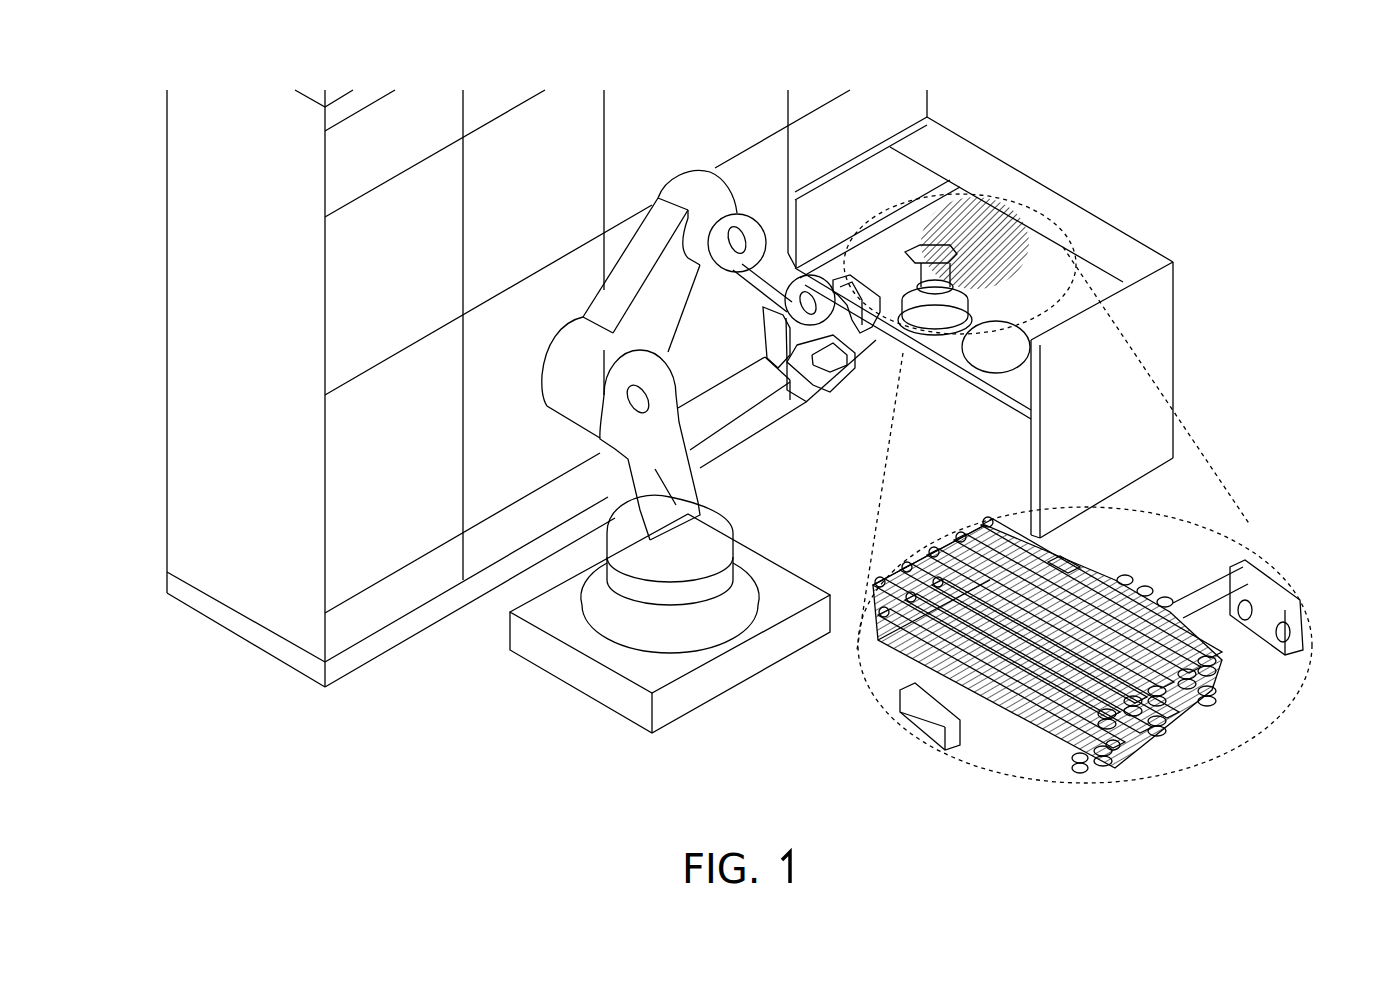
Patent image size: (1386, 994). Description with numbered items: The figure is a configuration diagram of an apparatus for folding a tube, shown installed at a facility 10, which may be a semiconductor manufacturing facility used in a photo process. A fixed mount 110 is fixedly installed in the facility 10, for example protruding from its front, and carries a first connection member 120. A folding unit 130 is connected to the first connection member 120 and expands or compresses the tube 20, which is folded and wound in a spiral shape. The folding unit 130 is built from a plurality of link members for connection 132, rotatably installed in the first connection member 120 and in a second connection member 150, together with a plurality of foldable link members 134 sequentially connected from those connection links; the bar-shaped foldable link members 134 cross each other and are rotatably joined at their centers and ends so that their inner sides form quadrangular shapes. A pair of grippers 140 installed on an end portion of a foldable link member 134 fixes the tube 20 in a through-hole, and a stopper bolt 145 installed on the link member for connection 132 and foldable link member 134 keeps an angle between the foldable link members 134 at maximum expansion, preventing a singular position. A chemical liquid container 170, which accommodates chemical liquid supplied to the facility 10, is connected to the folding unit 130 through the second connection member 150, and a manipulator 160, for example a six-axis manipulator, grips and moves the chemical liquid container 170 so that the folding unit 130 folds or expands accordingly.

The facility 10 is at (233, 562).
The tube 20 is at (975, 182).
The fixed mount 110 is at (1243, 580).
The first connection member 120 is at (1262, 706).
The folding unit 130 is at (1030, 742).
The link member for connection 132 is at (883, 700).
The foldable link member 134 is at (1060, 572).
The pair of grippers 140 is at (1113, 752).
The stopper bolt 145 is at (1080, 772).
The second connection member 150 is at (920, 717).
The manipulator 160 is at (667, 510).
The chemical liquid container 170 is at (1080, 228).